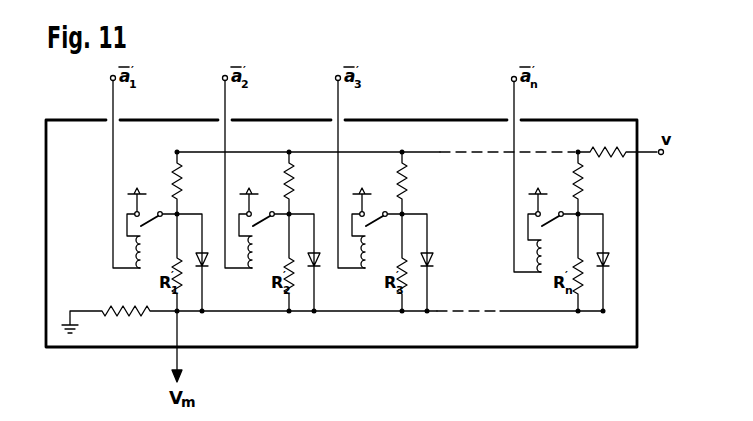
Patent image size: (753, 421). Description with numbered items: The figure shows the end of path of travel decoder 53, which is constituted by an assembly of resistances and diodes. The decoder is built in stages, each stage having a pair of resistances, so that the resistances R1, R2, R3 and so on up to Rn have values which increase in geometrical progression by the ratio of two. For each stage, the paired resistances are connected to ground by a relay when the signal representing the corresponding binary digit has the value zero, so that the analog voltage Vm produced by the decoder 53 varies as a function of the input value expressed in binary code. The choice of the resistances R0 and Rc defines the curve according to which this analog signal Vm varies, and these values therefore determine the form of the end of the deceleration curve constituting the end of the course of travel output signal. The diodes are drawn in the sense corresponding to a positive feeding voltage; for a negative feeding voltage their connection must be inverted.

The end of path of travel decoder 53 is at (68, 347).
The resistance R1 is at (188, 183).
The resistance R2 is at (300, 183).
The resistance R3 is at (413, 183).
The resistance Rn is at (589, 183).
The resistance R0 is at (621, 144).
The resistance Rc is at (119, 324).